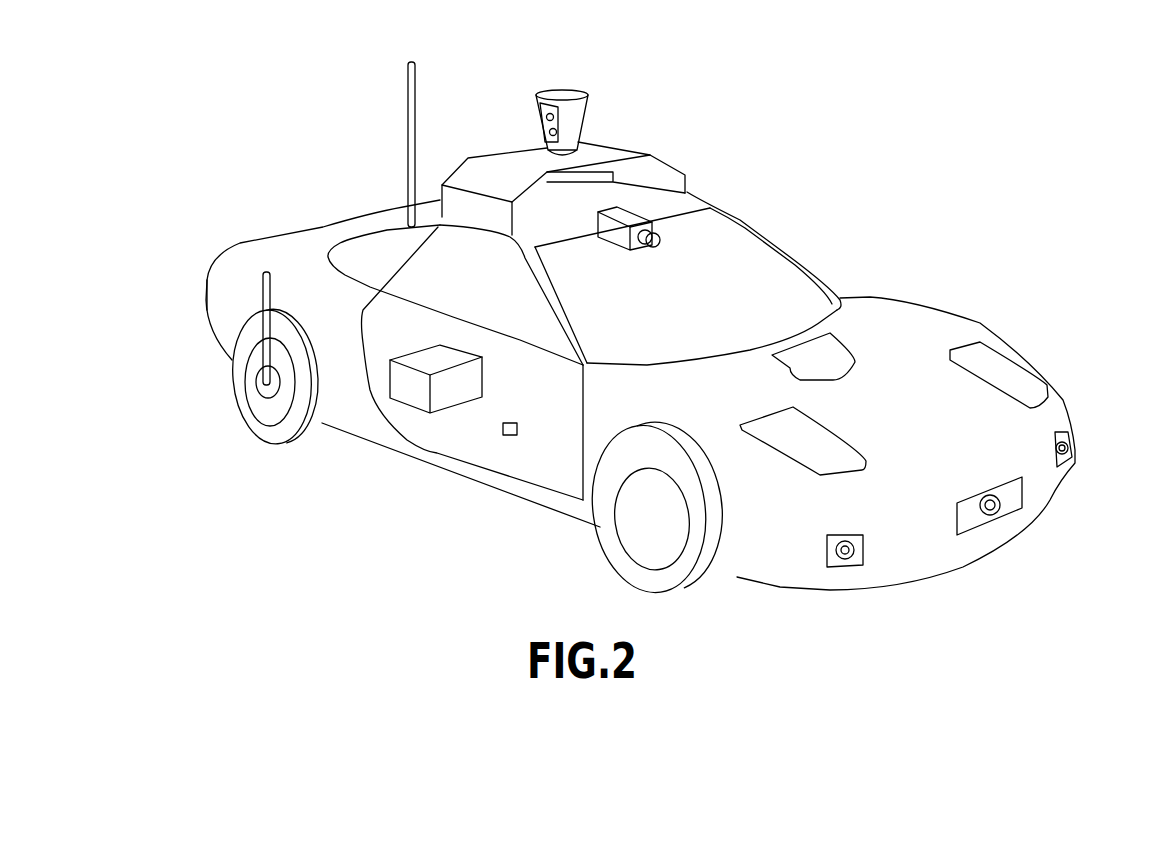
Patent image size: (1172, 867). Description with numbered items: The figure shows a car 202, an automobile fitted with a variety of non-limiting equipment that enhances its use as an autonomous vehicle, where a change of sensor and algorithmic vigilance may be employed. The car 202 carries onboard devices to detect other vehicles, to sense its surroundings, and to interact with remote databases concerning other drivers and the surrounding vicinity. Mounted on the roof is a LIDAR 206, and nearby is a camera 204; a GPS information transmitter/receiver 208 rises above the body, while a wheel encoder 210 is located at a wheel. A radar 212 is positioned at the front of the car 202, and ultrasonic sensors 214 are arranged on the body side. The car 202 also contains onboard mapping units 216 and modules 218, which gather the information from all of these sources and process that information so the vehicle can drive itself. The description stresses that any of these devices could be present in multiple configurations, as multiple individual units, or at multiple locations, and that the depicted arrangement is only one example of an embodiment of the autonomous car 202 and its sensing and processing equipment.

The car 202 is at (983, 317).
The camera 204 is at (653, 223).
The LIDAR 206 is at (590, 117).
The GPS information transmitter/receiver 208 is at (409, 110).
The wheel encoder 210 is at (262, 388).
The radar 212 is at (1003, 500).
The ultrasonic sensors 214 is at (517, 435).
The onboard mapping units 216 is at (408, 390).
The modules 218 is at (833, 355).